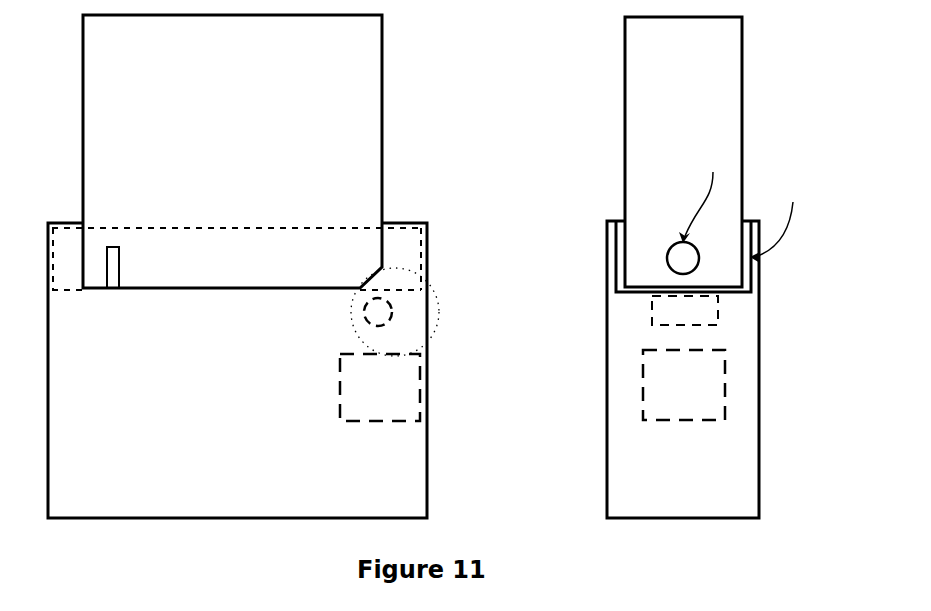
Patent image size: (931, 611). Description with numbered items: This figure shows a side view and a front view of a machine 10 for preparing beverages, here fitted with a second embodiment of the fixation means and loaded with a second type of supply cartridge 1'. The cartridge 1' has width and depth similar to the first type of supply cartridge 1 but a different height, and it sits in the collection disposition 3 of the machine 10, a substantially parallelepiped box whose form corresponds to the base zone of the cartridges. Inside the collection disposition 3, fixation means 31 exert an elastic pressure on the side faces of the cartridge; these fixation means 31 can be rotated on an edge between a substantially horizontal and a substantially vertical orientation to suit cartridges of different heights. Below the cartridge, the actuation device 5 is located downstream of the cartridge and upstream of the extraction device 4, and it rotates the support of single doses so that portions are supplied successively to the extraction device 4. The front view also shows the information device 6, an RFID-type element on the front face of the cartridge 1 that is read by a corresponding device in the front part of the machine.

The supply cartridge 1' is at (209, 151).
The supply cartridge 1 is at (683, 152).
The machine for preparing beverages 10 is at (385, 360).
The collection disposition 3 is at (428, 236).
The fixation means 31 is at (133, 267).
The actuation device 5 is at (525, 312).
The extraction device 4 is at (532, 385).
The information device 6 is at (696, 212).